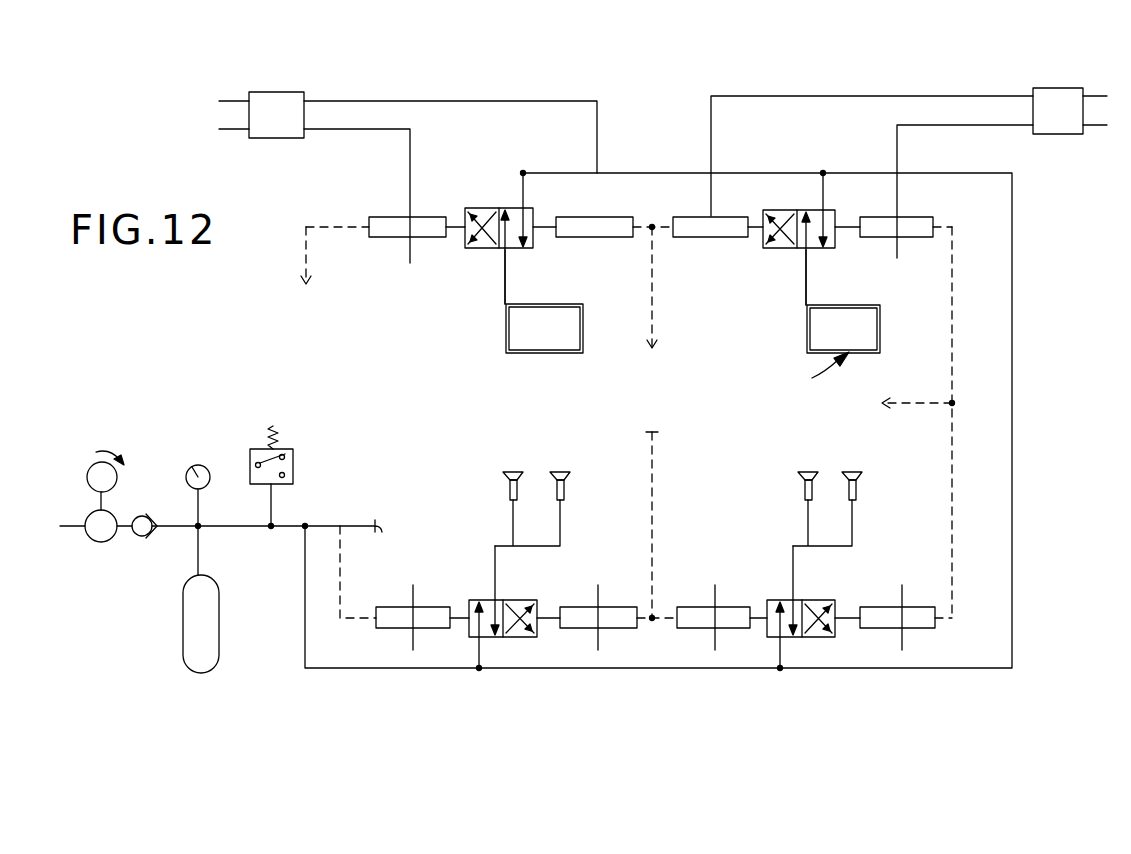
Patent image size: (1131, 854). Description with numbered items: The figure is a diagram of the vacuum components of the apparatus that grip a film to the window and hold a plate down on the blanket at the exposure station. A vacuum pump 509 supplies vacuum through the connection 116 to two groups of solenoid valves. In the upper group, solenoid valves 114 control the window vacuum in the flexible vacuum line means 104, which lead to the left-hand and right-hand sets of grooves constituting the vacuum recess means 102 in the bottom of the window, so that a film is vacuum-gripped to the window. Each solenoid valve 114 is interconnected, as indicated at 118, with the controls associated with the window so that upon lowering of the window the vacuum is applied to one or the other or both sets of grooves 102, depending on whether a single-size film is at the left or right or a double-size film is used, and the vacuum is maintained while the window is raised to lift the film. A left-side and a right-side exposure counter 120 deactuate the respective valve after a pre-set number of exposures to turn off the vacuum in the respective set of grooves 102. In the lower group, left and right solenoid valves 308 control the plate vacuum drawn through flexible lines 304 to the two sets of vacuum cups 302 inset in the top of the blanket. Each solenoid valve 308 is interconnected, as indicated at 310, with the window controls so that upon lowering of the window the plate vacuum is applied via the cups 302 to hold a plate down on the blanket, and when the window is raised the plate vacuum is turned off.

The vacuum recess means 102 is at (543, 368).
The vacuum line means 104 is at (505, 282).
The solenoid valves 114 is at (462, 250).
The connection to vacuum pump 116 is at (1012, 398).
The interconnection with window controls 118 is at (495, 98).
The exposure counter 120 is at (276, 92).
The vacuum cups 302 is at (561, 470).
The flexible lines 304 is at (560, 512).
The solenoid valves 308 is at (517, 637).
The interconnection with window controls 310 is at (413, 642).
The vacuum pump 509 is at (97, 542).